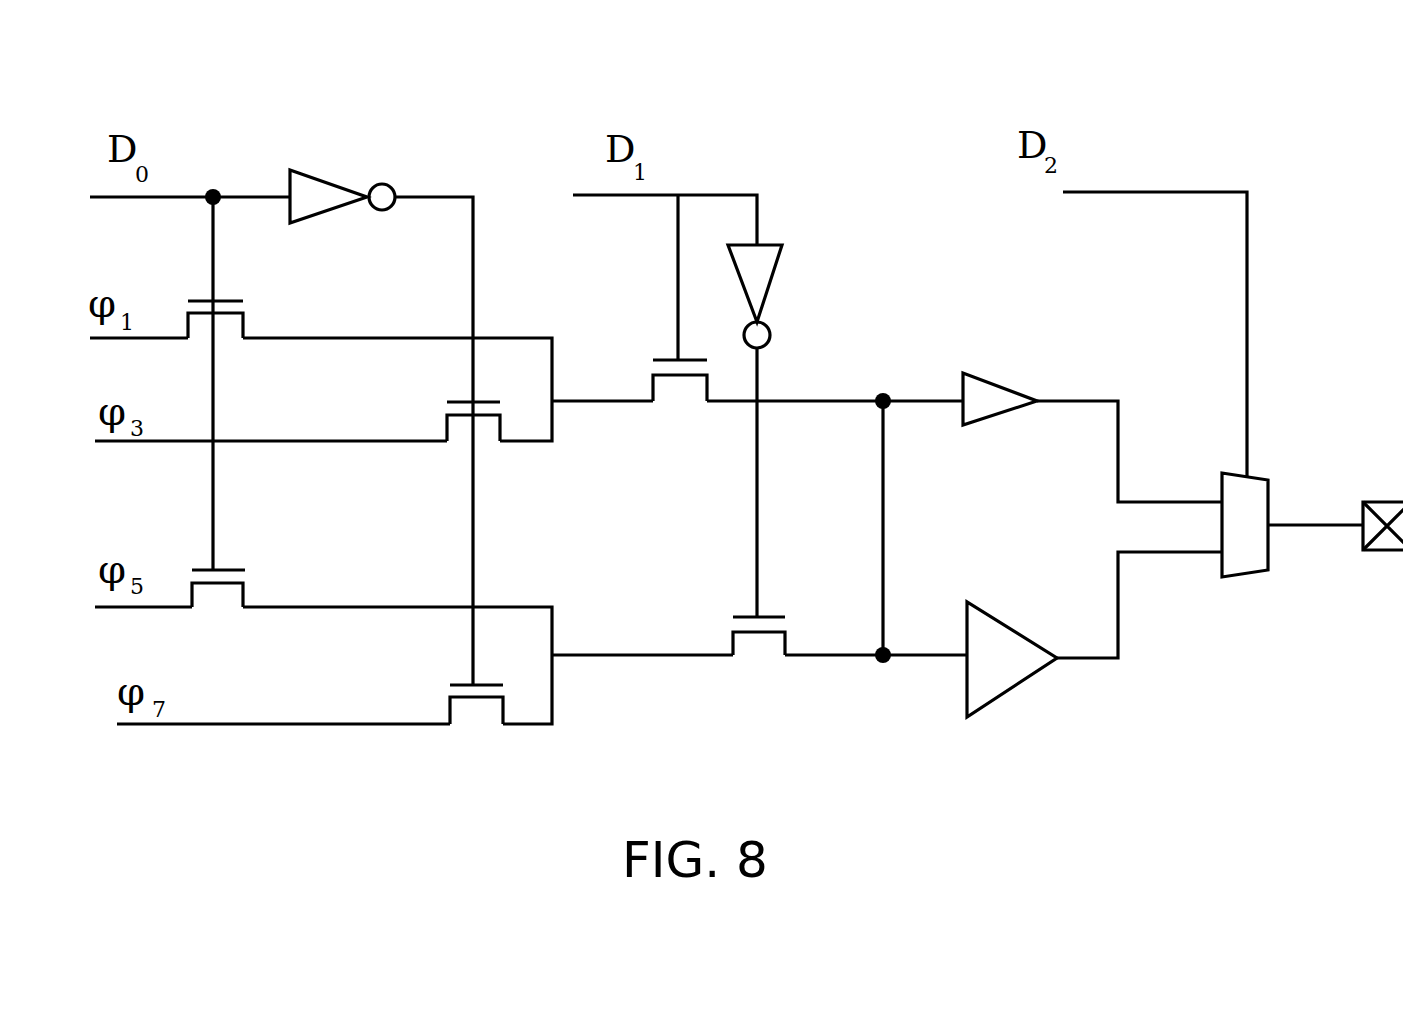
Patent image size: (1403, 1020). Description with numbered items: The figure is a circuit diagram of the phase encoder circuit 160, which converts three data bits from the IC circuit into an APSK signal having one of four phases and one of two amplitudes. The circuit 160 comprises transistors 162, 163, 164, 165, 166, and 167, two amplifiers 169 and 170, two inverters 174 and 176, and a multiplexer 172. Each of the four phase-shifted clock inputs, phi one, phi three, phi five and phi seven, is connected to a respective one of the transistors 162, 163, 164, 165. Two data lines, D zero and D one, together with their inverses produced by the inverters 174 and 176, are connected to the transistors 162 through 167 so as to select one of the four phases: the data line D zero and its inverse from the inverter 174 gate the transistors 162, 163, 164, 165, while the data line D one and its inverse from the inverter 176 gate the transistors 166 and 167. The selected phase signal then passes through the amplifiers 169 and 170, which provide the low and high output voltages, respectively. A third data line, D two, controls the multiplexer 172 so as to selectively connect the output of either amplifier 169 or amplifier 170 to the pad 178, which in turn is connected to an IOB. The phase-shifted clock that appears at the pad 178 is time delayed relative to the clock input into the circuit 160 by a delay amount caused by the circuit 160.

The phase encoder circuit 160 is at (1223, 733).
The transistor 162 is at (243, 325).
The transistor 163 is at (447, 441).
The transistor 164 is at (243, 583).
The transistor 165 is at (450, 713).
The transistor 166 is at (707, 401).
The transistor 167 is at (733, 632).
The amplifier 169 is at (965, 373).
The amplifier 170 is at (980, 601).
The multiplexer 172 is at (1238, 577).
The inverter 174 is at (318, 176).
The inverter 176 is at (771, 283).
The pad 178 is at (1372, 552).